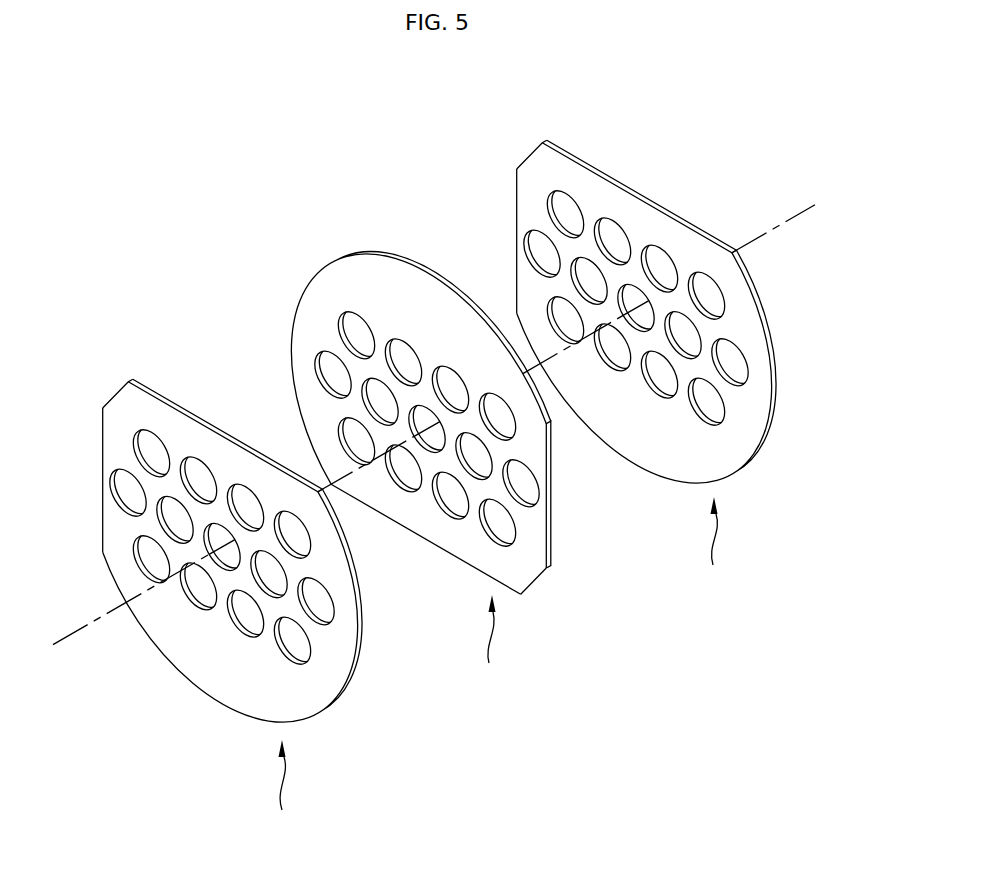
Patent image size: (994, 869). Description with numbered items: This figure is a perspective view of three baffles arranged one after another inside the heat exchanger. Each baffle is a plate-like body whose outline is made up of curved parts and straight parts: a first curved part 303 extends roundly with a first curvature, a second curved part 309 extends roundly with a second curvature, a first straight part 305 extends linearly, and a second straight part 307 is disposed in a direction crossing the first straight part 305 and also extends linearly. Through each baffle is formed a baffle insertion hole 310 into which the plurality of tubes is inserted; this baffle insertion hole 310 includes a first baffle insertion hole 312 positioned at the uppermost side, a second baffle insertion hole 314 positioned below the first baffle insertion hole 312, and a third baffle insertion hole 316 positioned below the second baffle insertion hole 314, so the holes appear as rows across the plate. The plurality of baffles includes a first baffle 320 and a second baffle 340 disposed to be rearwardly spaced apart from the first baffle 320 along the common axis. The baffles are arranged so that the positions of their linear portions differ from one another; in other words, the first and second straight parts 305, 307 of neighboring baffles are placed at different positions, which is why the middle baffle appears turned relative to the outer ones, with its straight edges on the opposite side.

The first curved part 303 is at (377, 254).
The first straight part 305 is at (167, 402).
The second straight part 307 is at (103, 453).
The second curved part 309 is at (528, 154).
The baffle insertion hole 310 is at (193, 610).
The first baffle insertion hole 312 is at (338, 326).
The second baffle insertion hole 314 is at (316, 373).
The third baffle insertion hole 316 is at (340, 441).
The first baffle 320 is at (498, 668).
The second baffle 340 is at (490, 644).